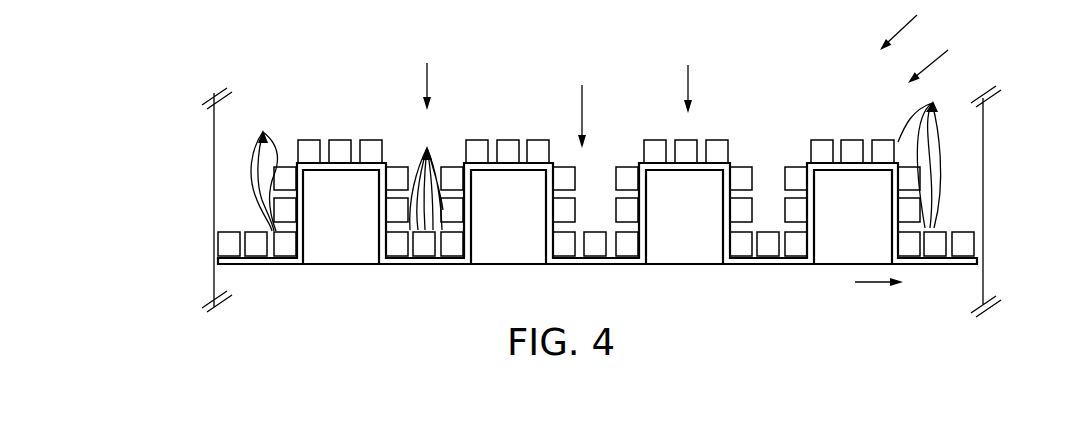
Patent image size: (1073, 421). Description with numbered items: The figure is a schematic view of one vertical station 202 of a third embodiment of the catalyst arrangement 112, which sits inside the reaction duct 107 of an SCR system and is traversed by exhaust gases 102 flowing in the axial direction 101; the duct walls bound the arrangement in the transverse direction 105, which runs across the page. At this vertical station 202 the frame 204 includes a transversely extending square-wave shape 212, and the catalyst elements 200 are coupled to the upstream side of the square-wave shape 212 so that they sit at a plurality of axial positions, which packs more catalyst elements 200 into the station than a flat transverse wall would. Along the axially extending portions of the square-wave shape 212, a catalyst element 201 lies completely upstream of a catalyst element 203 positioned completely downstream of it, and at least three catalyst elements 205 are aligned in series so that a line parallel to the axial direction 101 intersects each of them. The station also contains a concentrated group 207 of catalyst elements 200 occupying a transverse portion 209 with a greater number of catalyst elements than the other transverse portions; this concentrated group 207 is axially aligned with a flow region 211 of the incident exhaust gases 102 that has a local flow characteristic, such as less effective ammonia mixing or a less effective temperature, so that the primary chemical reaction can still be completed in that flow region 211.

The axial direction 101 is at (582, 105).
The exhaust gases 102 is at (706, 69).
The transverse direction 105 is at (870, 282).
The reaction duct 107 is at (214, 167).
The catalyst arrangement 112 is at (919, 25).
The catalyst elements 200 is at (934, 154).
The catalyst element 201 is at (730, 150).
The vertical station 202 is at (949, 59).
The catalyst element 203 is at (753, 210).
The frame 204 is at (647, 245).
The catalyst elements aligned in series 205 is at (264, 168).
The concentrated group of catalyst elements 207 is at (427, 177).
The transverse portion 209 is at (472, 270).
The flow region 211 is at (427, 78).
The square-wave shape 212 is at (768, 264).